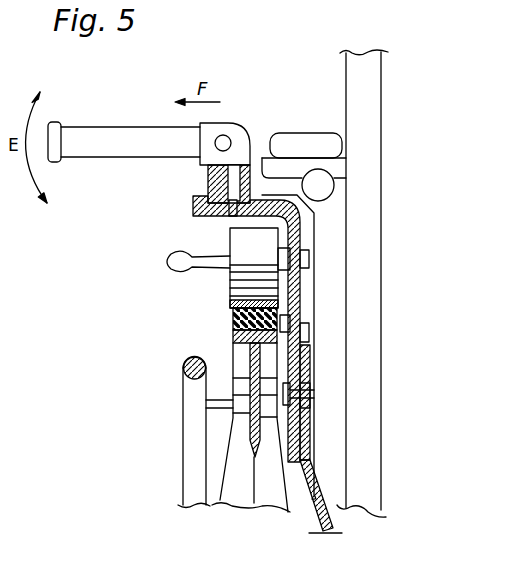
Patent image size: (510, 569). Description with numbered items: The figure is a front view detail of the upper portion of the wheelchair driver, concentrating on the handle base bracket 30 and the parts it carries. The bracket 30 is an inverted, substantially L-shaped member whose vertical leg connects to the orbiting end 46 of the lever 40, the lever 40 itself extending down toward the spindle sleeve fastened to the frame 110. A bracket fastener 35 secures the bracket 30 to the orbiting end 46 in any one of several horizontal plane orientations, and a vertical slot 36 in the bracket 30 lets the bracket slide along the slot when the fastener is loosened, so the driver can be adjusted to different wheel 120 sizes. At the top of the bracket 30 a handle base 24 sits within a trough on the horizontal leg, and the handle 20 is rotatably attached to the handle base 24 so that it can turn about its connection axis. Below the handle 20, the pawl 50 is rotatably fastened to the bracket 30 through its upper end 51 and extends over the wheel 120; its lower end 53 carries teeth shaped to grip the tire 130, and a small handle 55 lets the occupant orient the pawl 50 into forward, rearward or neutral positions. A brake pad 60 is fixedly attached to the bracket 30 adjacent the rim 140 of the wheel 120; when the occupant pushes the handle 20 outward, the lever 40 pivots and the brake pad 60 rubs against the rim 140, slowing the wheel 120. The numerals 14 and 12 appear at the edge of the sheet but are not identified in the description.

The frame 110 is at (365, 105).
The handle 20 is at (94, 140).
The handle base 24 is at (250, 166).
The handle base bracket 30 is at (200, 198).
The upper end 51 is at (229, 237).
The pawl 50 is at (280, 283).
The lower end 53 is at (232, 303).
The handle 55 is at (170, 266).
The tire 130 is at (235, 318).
The rim 140 is at (233, 338).
The brake pad 60 is at (286, 330).
The wheel 120 is at (197, 427).
The bracket fastener 35 is at (300, 398).
The orbiting end 46 is at (312, 390).
The vertical slot 36 is at (295, 427).
The lever 40 is at (320, 491).
The frame 14 is at (494, 329).
The frame member 12 is at (503, 450).